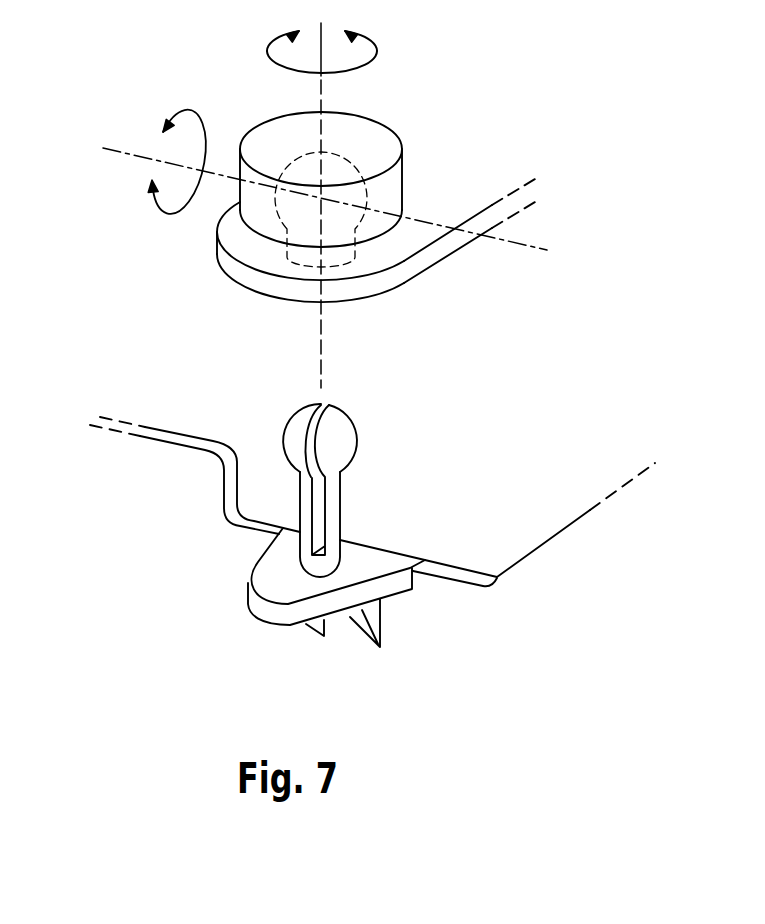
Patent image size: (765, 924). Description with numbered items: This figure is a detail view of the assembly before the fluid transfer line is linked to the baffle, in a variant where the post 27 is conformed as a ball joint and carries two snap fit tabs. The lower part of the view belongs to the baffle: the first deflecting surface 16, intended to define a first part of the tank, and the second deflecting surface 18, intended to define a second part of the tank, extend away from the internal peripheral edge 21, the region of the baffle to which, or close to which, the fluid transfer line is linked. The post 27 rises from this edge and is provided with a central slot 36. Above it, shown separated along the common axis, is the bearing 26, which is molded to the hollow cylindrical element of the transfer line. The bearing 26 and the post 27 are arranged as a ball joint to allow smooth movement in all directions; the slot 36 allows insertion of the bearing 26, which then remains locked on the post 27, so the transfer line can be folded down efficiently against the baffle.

The first deflecting surface 16 is at (125, 492).
The second deflecting surface 18 is at (193, 436).
The internal peripheral edge 21 is at (280, 582).
The bearing 26 is at (267, 135).
The post 27 is at (332, 508).
The central slot 36 is at (320, 404).